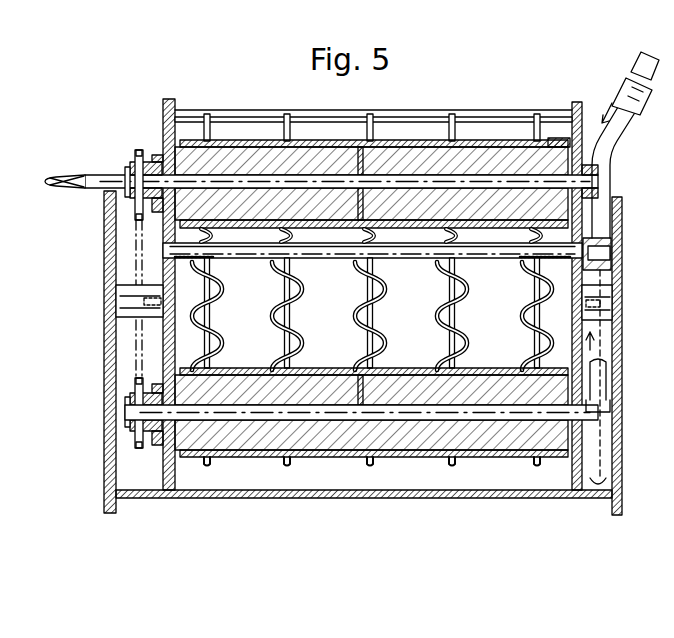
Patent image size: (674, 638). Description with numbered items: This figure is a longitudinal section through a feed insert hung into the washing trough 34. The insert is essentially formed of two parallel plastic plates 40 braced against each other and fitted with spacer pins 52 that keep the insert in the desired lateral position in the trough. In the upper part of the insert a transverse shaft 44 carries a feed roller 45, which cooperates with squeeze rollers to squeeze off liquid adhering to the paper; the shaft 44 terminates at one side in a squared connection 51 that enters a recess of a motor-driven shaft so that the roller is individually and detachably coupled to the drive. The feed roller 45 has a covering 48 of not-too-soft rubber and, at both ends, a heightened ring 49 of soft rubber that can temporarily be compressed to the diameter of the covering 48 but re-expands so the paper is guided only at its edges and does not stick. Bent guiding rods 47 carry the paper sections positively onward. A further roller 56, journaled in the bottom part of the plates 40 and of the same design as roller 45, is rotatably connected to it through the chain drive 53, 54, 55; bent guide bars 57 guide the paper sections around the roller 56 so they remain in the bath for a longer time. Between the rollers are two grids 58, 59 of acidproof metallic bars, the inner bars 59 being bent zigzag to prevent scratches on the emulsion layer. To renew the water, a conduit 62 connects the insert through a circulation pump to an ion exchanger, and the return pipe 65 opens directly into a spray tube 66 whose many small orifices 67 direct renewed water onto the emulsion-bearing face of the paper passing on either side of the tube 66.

The trough 34 is at (104, 378).
The plastic plates 40 is at (577, 102).
The transverse shaft 44 is at (107, 176).
The feed roller 45 is at (245, 155).
The bent guiding rods 47 is at (440, 118).
The covering 48 is at (317, 140).
The heightened ring 49 is at (554, 138).
The squared connection 51 is at (60, 176).
The spacer pins 52 is at (116, 293).
The chain drive 53 is at (139, 150).
The chain drive 54 is at (132, 343).
The chain drive 55 is at (139, 448).
The further roller 56 is at (250, 440).
The bent guide bars 57 is at (448, 462).
The grids 58 is at (462, 290).
The inner bars 59 is at (270, 326).
The conduit 62 is at (607, 376).
The return pipe 65 is at (641, 76).
The spray tube 66 is at (322, 258).
The small orifices 67 is at (212, 260).